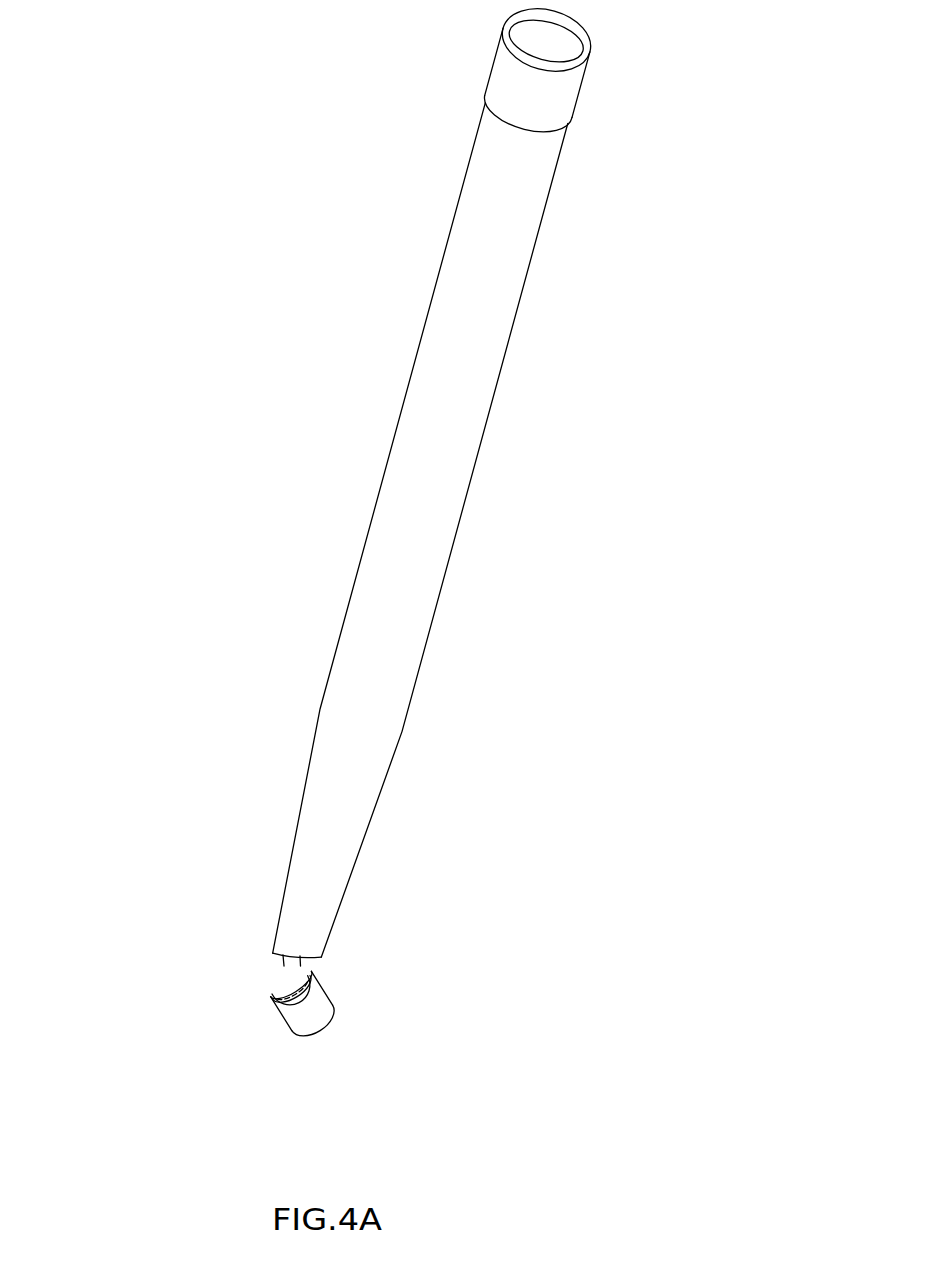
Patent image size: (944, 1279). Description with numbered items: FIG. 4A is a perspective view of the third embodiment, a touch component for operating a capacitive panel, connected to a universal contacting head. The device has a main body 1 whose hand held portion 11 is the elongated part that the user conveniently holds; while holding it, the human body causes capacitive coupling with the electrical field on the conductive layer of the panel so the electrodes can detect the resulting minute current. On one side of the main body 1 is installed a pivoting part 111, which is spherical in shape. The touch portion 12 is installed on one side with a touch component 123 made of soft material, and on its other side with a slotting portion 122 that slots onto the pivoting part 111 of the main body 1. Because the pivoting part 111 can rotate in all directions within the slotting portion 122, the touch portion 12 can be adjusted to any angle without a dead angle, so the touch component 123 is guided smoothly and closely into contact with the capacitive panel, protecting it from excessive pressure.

The main body 1 is at (522, 563).
The hand held portion 11 is at (468, 387).
The pivoting part 111 is at (278, 977).
The touch portion 12 is at (308, 1000).
The slotting portion 122 is at (303, 983).
The touch component 123 is at (315, 1023).